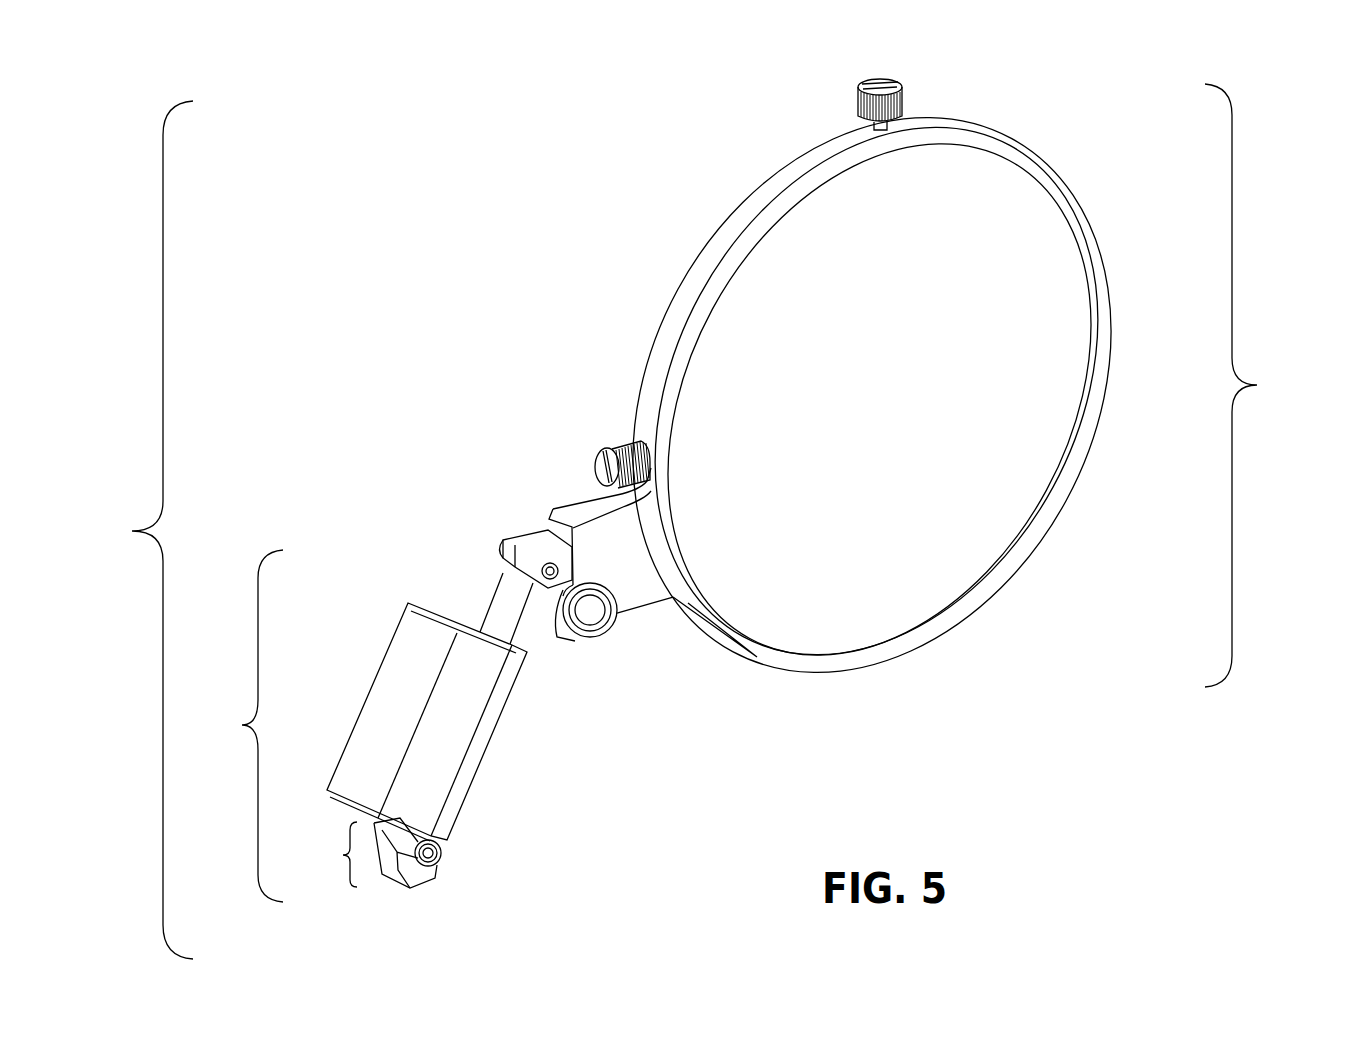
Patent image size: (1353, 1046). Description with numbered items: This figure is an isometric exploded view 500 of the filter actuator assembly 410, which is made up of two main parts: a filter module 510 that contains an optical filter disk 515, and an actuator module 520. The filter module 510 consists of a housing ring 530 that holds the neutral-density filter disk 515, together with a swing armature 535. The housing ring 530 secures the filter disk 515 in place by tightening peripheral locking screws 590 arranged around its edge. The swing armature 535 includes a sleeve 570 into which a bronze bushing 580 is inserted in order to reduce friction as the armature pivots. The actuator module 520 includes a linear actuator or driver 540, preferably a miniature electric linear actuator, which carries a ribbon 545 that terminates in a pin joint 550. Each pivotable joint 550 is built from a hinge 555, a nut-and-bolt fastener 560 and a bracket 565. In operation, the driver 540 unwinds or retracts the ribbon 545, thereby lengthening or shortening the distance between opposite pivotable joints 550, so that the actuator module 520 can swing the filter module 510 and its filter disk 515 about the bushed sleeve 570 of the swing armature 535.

The isometric exploded view 500 is at (362, 150).
The filter actuator assembly 410 is at (137, 530).
The filter module 510 is at (927, 395).
The optical filter disk 515 is at (924, 372).
The actuator module 520 is at (235, 726).
The housing ring 530 is at (705, 242).
The swing armature 535 is at (555, 507).
The linear actuator or driver 540 is at (385, 655).
The ribbon 545 is at (490, 590).
The pin joint 550 is at (322, 854).
The hinge 555 is at (518, 540).
The nut-and-bolt fastener 560 is at (440, 857).
The bracket 565 is at (390, 883).
The sleeve 570 is at (572, 640).
The bronze bushing 580 is at (606, 632).
The peripheral locking screws 590 is at (904, 90).